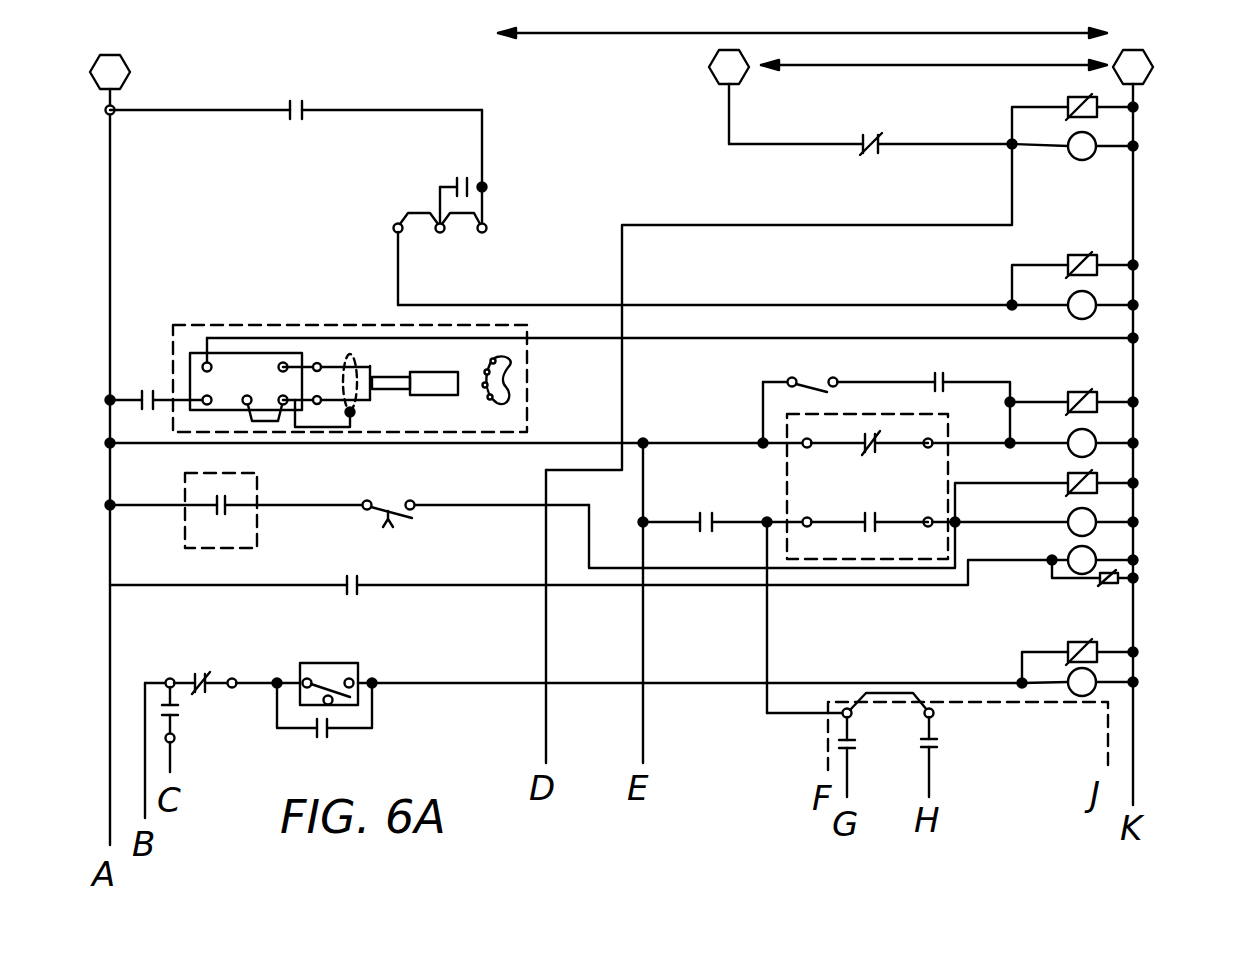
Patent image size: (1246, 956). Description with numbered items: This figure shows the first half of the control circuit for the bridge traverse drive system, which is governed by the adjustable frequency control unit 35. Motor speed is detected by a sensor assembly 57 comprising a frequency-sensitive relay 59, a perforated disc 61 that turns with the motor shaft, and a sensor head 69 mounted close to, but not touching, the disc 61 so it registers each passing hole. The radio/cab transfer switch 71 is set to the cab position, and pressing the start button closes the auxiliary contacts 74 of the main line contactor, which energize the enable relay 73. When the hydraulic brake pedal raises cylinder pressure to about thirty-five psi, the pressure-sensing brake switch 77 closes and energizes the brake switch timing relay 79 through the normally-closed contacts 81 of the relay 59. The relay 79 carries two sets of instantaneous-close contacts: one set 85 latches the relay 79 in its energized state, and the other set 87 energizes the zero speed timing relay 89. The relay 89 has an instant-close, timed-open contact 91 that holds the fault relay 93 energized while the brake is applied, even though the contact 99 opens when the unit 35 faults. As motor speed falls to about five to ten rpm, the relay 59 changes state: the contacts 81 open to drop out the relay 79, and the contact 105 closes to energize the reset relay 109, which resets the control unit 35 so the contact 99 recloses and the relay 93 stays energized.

The auxiliary contacts 74 is at (304, 108).
The sensor assembly 57 is at (350, 325).
The frequency-sensitive relay 59 is at (256, 330).
The disc 61 is at (500, 377).
The sensor head 69 is at (438, 395).
The radio/cab transfer switch 71 is at (228, 507).
The contacts 87 is at (358, 580).
The normally-closed contacts 81 is at (206, 678).
The pressure-sensing brake switch 77 is at (333, 666).
The contacts 85 is at (330, 735).
The contact 105 is at (178, 717).
The reset relay 109 is at (1097, 138).
The enable relay 73 is at (1092, 298).
The instant-close, timed-open contact 91 is at (808, 392).
The adjustable frequency control unit 35 is at (930, 413).
The contact 99 is at (866, 450).
The fault relay 93 is at (1097, 435).
The zero speed timing relay 89 is at (1092, 553).
The brake switch timing relay 79 is at (1095, 675).